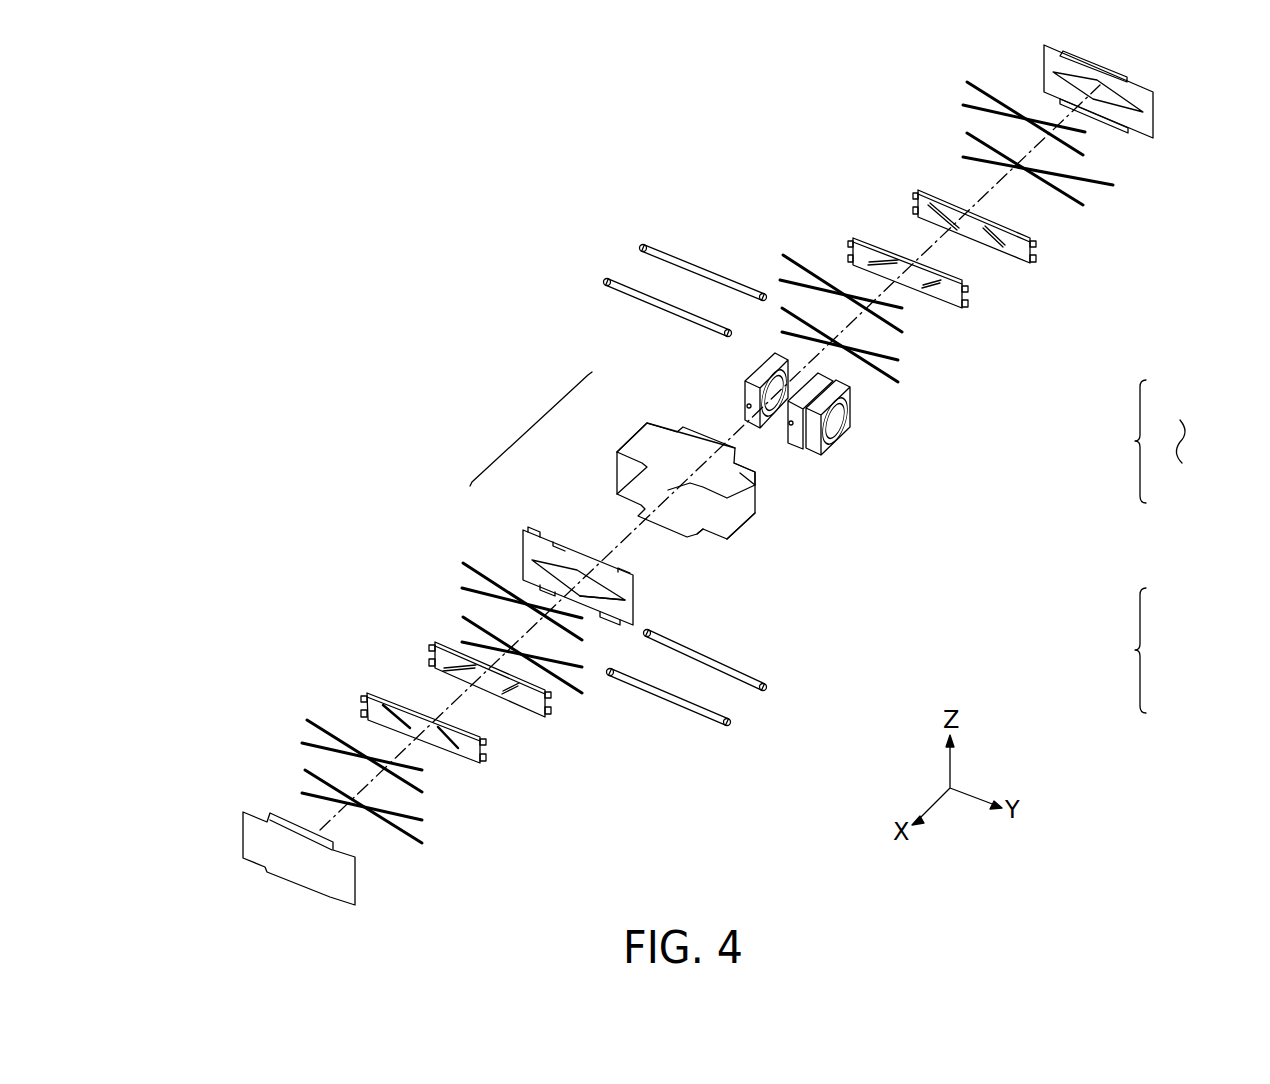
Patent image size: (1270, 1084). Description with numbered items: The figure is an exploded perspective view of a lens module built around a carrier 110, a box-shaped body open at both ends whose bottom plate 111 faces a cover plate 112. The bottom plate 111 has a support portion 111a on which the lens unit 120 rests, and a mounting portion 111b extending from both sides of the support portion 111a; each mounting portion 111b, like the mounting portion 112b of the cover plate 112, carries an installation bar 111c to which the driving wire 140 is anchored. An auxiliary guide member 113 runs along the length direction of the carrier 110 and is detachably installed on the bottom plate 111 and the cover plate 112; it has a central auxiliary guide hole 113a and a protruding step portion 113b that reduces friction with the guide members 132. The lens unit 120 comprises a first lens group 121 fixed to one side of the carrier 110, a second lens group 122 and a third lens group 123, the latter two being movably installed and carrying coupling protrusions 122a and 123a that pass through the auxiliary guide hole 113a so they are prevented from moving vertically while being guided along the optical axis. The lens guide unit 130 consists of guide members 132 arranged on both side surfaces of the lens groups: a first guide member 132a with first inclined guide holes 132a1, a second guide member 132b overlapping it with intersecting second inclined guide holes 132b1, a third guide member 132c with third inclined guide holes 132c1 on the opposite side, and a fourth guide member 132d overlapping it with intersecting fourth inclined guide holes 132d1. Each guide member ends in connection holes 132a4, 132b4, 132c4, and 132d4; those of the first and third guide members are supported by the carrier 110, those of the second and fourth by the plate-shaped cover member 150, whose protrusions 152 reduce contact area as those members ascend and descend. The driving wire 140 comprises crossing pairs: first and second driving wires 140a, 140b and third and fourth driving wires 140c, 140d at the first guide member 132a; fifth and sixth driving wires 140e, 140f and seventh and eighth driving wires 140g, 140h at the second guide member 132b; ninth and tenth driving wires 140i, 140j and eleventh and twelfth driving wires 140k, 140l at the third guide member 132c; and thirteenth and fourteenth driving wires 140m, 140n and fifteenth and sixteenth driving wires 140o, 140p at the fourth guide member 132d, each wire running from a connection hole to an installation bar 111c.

The carrier 110 is at (532, 427).
The bottom plate 111 is at (623, 487).
The support portion 111a is at (727, 517).
The mounting portion 111b is at (697, 535).
The installation bar 111c is at (607, 282).
The cover plate 112 is at (632, 442).
The mounting portion 112b is at (760, 485).
The auxiliary guide member 113 is at (525, 535).
The auxiliary guide hole 113a is at (523, 563).
The step portion 113b is at (593, 578).
The lens unit 120 is at (825, 419).
The first lens group 121 is at (797, 392).
The second lens group 122 is at (850, 428).
The coupling protrusion 122a is at (791, 425).
The third lens group 123 is at (833, 433).
The coupling protrusion 123a is at (747, 406).
The lens guide unit 130 is at (1098, 662).
The guide member 132 is at (1136, 648).
The first guide member 132a is at (478, 676).
The first inclined guide hole 132a1 is at (433, 663).
The connection hole 132a4 is at (550, 702).
The second guide member 132b is at (429, 724).
The second inclined guide hole 132b1 is at (367, 694).
The connection hole 132b4 is at (485, 750).
The third guide member 132c is at (932, 258).
The third inclined guide hole 132c1 is at (853, 239).
The connection hole 132c4 is at (968, 305).
The fourth guide member 132d is at (994, 225).
The fourth inclined guide hole 132d1 is at (918, 193).
The connection hole 132d4 is at (1036, 258).
The driving wire 140 is at (1142, 440).
The first driving wire 140a is at (463, 563).
The second driving wire 140b is at (462, 588).
The third driving wire 140c is at (592, 652).
The fourth driving wire 140d is at (582, 693).
The fifth driving wire 140e is at (307, 720).
The sixth driving wire 140f is at (302, 743).
The seventh driving wire 140g is at (305, 770).
The eighth driving wire 140h is at (302, 793).
The ninth driving wire 140i is at (783, 255).
The tenth driving wire 140j is at (780, 280).
The eleventh driving wire 140k is at (898, 360).
The twelfth driving wire 140l is at (898, 382).
The thirteenth driving wire 140m is at (968, 82).
The fourteenth driving wire 140n is at (963, 105).
The fifteenth driving wire 140o is at (1113, 185).
The sixteenth driving wire 140p is at (1083, 205).
The cover member 150 is at (1140, 92).
The protrusion 152 is at (1143, 112).